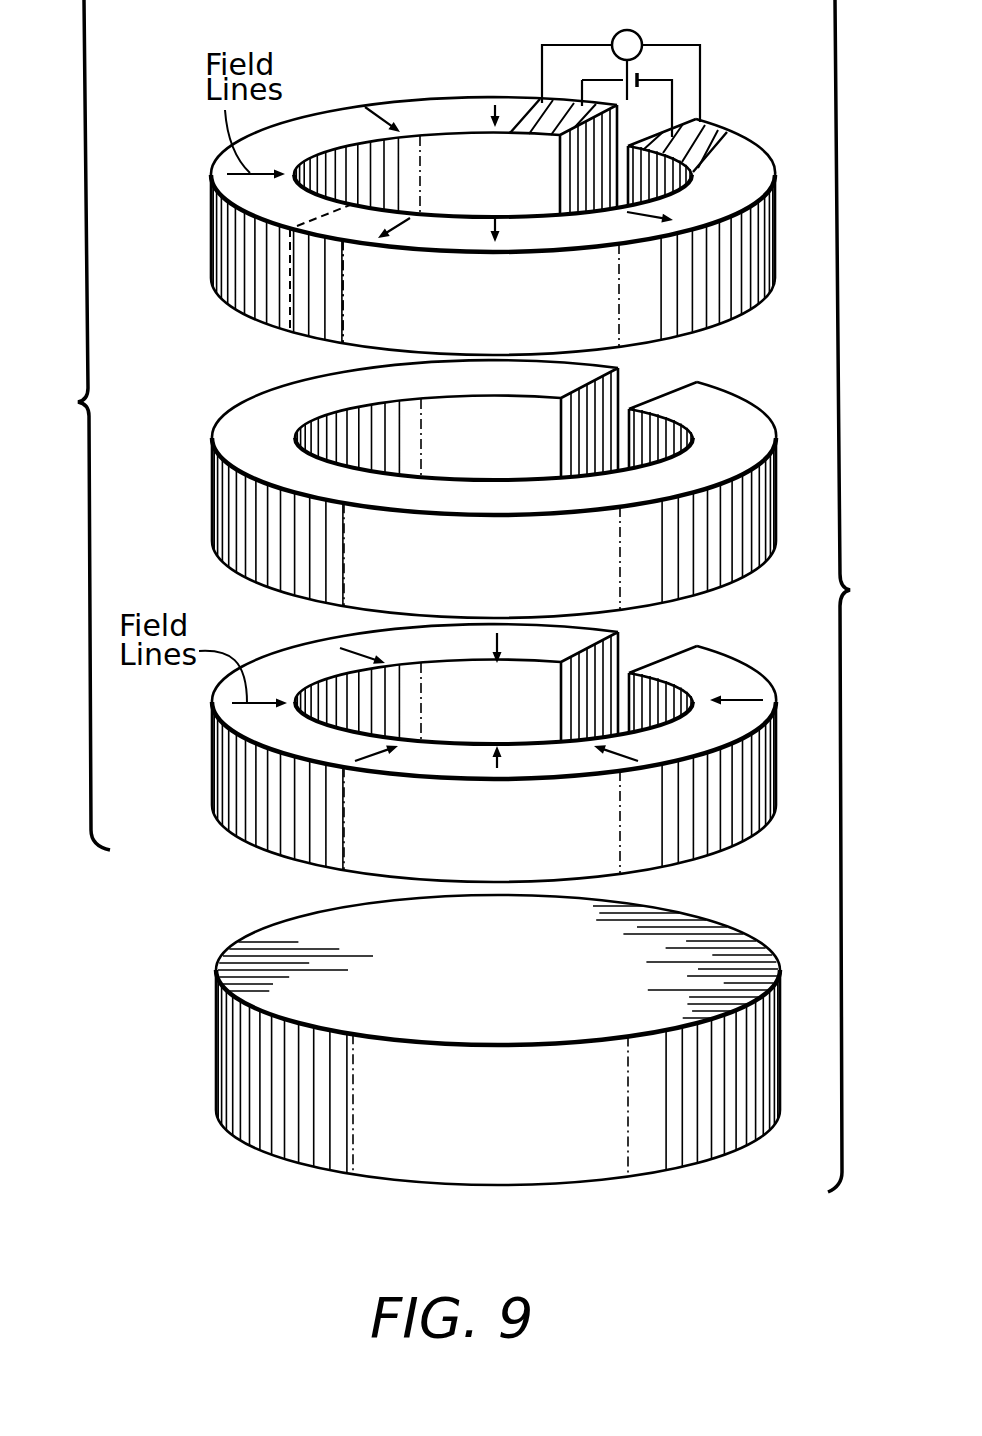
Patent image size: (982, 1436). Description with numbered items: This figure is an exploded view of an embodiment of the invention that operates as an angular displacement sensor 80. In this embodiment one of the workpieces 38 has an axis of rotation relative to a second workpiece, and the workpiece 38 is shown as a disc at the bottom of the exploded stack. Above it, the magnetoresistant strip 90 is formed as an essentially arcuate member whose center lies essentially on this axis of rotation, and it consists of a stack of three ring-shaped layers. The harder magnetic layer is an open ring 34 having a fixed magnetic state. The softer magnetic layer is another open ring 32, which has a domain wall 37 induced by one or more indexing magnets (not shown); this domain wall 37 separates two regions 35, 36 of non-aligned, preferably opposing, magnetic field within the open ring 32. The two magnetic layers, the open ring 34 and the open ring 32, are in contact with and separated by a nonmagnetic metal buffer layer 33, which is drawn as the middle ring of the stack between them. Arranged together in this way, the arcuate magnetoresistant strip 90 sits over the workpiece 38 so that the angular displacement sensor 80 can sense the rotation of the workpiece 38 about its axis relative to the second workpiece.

The open ring 32 is at (520, 307).
The nonmagnetic metal buffer layer 33 is at (517, 571).
The open ring 34 is at (513, 843).
The region 35 is at (275, 291).
The region 36 is at (432, 331).
The domain wall 37 is at (292, 303).
The workpiece 38 is at (503, 1131).
The angular displacement sensor 80 is at (865, 596).
The magnetoresistant strip 90 is at (70, 425).